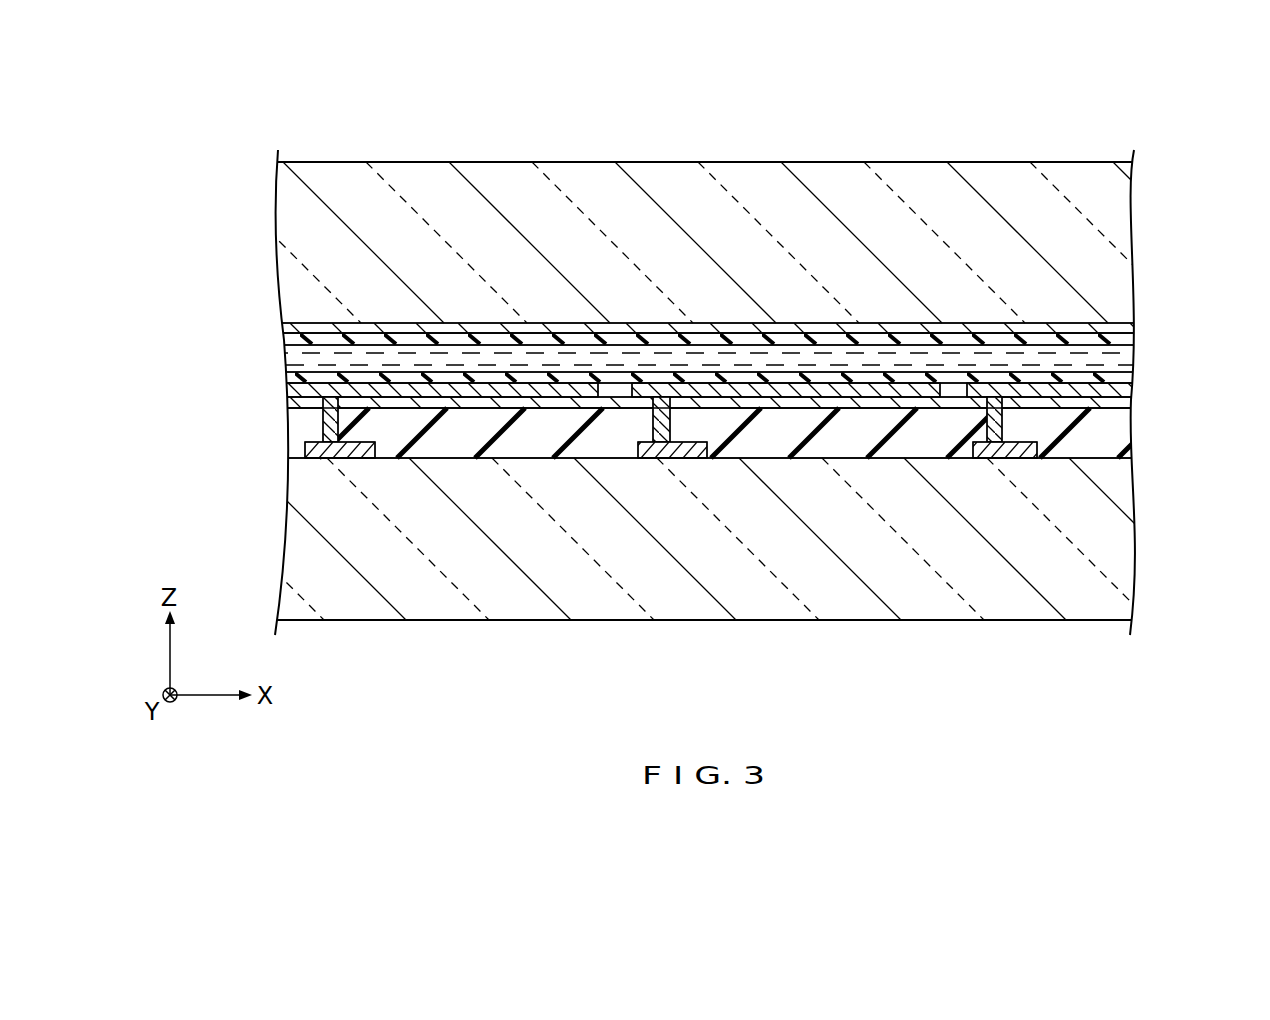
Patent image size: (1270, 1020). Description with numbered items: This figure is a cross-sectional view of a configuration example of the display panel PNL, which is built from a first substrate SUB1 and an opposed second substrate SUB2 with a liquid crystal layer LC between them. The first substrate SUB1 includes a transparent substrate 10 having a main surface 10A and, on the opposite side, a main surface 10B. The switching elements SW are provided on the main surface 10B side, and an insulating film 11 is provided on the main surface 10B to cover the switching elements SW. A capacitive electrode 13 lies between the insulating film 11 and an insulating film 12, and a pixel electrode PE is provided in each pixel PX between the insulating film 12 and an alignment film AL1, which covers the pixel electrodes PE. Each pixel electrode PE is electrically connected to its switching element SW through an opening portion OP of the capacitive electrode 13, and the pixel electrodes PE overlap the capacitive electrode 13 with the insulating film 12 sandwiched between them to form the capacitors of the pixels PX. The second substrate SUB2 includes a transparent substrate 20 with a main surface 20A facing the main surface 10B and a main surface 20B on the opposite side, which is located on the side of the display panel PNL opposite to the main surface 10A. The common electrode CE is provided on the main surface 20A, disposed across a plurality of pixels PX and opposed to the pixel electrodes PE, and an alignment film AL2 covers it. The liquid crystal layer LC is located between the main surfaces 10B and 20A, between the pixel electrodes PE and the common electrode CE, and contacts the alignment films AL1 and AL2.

The display panel PNL is at (1112, 161).
The first substrate SUB1 is at (712, 564).
The second substrate SUB2 is at (735, 211).
The transparent substrate 10 is at (290, 564).
The main surface 10A is at (913, 620).
The main surface 10B is at (838, 450).
The transparent substrate 20 is at (288, 232).
The main surface 20A is at (874, 325).
The main surface 20B is at (925, 162).
The insulating film 11 is at (292, 440).
The insulating film 12 is at (292, 389).
The capacitive electrode 13 is at (296, 403).
The switching element SW is at (320, 457).
The opening portion OP is at (320, 417).
The pixel electrode PE is at (506, 392).
The common electrode CE is at (1128, 328).
The alignment film AL1 is at (292, 376).
The alignment film AL2 is at (1128, 341).
The liquid crystal layer LC is at (1120, 366).
The pixel PX is at (506, 438).